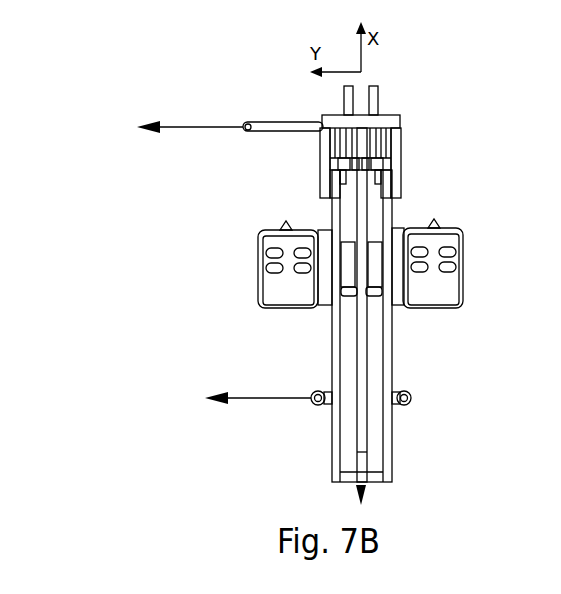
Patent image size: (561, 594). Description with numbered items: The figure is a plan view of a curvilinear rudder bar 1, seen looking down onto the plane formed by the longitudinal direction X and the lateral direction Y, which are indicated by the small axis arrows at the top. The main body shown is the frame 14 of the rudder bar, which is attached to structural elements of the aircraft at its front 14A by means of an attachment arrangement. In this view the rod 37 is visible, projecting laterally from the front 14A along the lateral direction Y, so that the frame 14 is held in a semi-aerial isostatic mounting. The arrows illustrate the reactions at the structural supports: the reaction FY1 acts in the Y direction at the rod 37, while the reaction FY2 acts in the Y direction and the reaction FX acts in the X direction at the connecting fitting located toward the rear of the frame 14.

The measuring machine 1 is at (112, 322).
The frame 14 is at (412, 343).
The front 14A is at (278, 105).
The rod 37 is at (277, 133).
The reaction in the Y direction at the rod FY1 is at (178, 131).
The reaction in the Y direction at the connecting fitting FY2 is at (250, 400).
The reaction in the X direction FX is at (367, 452).